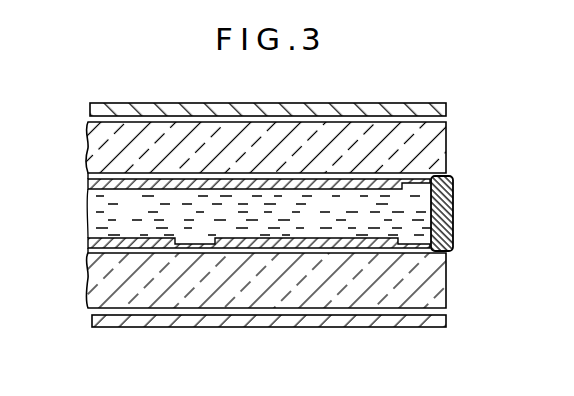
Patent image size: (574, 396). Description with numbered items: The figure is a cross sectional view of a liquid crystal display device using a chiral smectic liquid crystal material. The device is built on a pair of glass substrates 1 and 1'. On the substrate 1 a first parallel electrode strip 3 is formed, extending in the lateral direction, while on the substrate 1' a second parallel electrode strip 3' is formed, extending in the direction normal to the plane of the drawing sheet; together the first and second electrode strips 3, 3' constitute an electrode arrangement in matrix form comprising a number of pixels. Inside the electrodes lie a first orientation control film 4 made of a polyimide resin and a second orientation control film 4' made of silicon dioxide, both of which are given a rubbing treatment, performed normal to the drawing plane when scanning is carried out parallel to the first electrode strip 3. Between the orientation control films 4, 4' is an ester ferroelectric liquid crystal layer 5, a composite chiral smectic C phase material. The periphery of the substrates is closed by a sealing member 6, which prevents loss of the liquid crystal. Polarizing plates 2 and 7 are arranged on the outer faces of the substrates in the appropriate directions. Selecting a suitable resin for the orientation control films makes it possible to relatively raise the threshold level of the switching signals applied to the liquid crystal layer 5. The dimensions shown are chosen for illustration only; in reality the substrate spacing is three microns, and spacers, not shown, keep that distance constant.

The glass substrate 1 is at (296, 114).
The glass substrate 1' is at (297, 292).
The polarizing plate 2 is at (393, 102).
The first parallel electrode strip 3 is at (297, 147).
The second parallel electrode strip 3' is at (298, 260).
The first orientation control film 4 is at (65, 163).
The second orientation control film 4' is at (66, 233).
The ferroelectric liquid crystal layer 5 is at (102, 212).
The sealing member 6 is at (447, 203).
The polarizing plate 7 is at (425, 320).